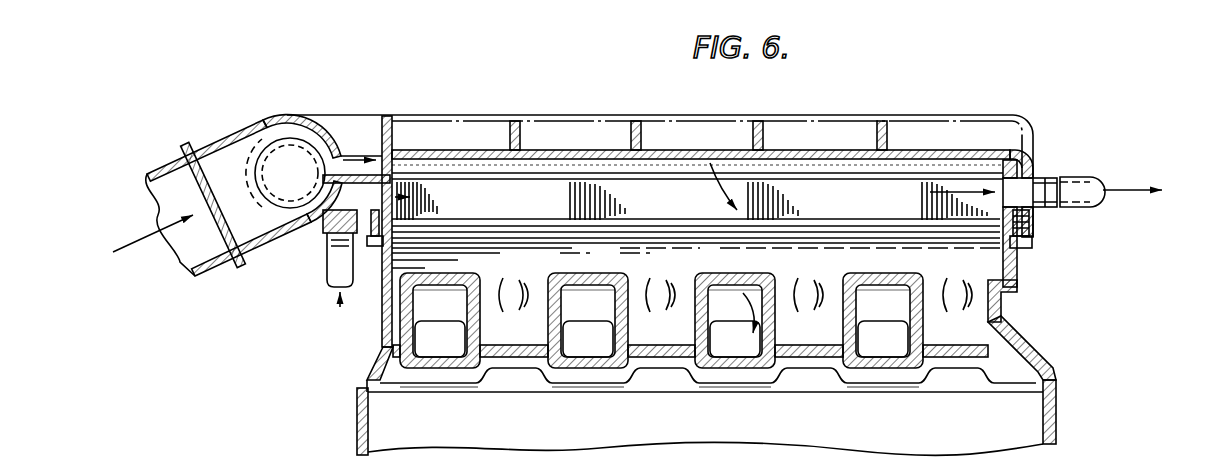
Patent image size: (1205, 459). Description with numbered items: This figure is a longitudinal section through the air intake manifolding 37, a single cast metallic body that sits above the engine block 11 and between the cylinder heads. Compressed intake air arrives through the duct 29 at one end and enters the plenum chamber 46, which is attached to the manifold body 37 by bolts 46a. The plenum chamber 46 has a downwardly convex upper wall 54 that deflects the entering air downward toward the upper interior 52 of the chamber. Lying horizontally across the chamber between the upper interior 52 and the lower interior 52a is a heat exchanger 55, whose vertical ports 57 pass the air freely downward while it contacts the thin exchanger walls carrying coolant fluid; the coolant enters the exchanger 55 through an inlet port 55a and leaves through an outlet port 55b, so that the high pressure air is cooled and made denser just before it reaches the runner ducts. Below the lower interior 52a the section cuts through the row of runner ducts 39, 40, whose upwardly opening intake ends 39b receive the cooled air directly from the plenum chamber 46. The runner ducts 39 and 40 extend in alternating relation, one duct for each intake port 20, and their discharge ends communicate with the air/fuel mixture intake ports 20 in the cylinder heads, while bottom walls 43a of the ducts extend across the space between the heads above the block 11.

The block 11 is at (1062, 417).
The air/fuel mixture intake ports 20 is at (432, 337).
The duct 29 is at (162, 162).
The air intake manifolding 37 is at (1016, 323).
The runner ducts 39 is at (513, 327).
The intake ends 39b is at (828, 278).
The runner ducts 40 is at (605, 300).
The bottom walls 43a is at (860, 363).
The plenum chamber 46 is at (962, 104).
The bolts 46a is at (1032, 243).
The upper interior 52 is at (587, 160).
The lower interior 52a is at (683, 243).
The upper wall 54 is at (463, 116).
The heat exchanger 55 is at (833, 183).
The inlet port 55a is at (337, 227).
The outlet port 55b is at (1045, 178).
The vertical ports 57 is at (460, 168).